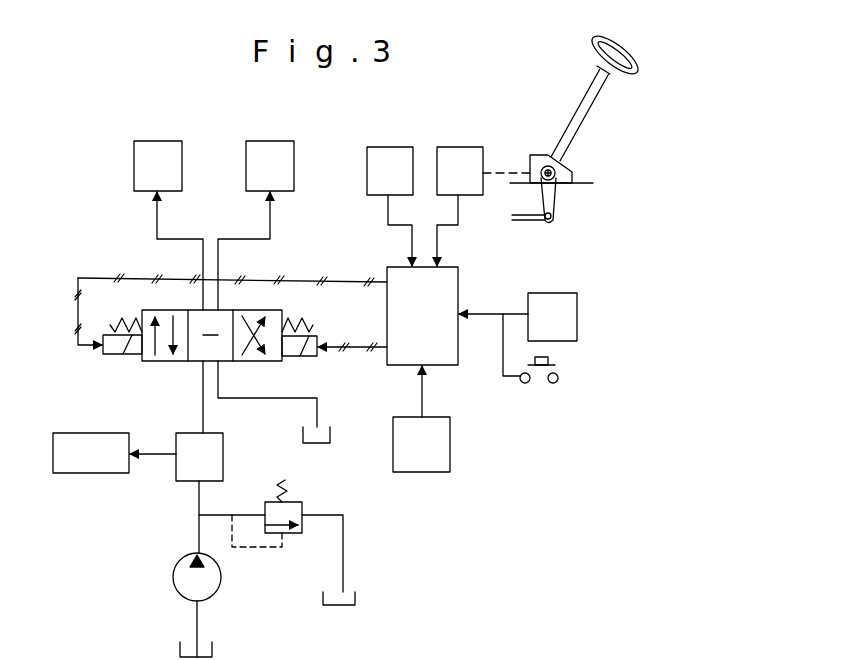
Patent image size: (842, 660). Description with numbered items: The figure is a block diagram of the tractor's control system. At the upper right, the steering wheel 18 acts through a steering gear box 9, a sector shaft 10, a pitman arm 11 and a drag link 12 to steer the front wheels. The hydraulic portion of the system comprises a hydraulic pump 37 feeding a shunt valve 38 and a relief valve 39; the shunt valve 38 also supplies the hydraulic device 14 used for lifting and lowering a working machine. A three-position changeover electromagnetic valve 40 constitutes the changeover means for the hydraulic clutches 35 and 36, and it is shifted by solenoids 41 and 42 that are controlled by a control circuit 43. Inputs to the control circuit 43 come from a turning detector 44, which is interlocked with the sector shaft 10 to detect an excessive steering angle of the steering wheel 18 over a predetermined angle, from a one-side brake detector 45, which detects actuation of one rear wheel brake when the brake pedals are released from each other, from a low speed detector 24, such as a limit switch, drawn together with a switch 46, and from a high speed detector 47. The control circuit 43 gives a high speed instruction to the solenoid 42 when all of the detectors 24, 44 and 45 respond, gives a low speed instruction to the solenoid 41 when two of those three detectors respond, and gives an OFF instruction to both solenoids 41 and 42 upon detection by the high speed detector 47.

The steering gear box 9 is at (543, 155).
The sector shaft 10 is at (555, 173).
The pitman arm 11 is at (552, 203).
The drag link 12 is at (537, 220).
The hydraulic device 14 is at (80, 465).
The steering wheel 18 is at (633, 60).
The low speed detector 24 is at (541, 328).
The hydraulic clutch 35 is at (147, 177).
The hydraulic clutch 36 is at (259, 177).
The hydraulic pump 37 is at (182, 578).
The shunt valve 38 is at (188, 468).
The relief valve 39 is at (290, 512).
The three-position changeover electromagnetic valve 40 is at (185, 362).
The solenoid 41 is at (112, 350).
The solenoid 42 is at (313, 357).
The control circuit 43 is at (411, 325).
The turning detector 44 is at (449, 182).
The one-side brake detector 45 is at (379, 182).
The switch 46 is at (540, 372).
The high speed detector 47 is at (410, 455).